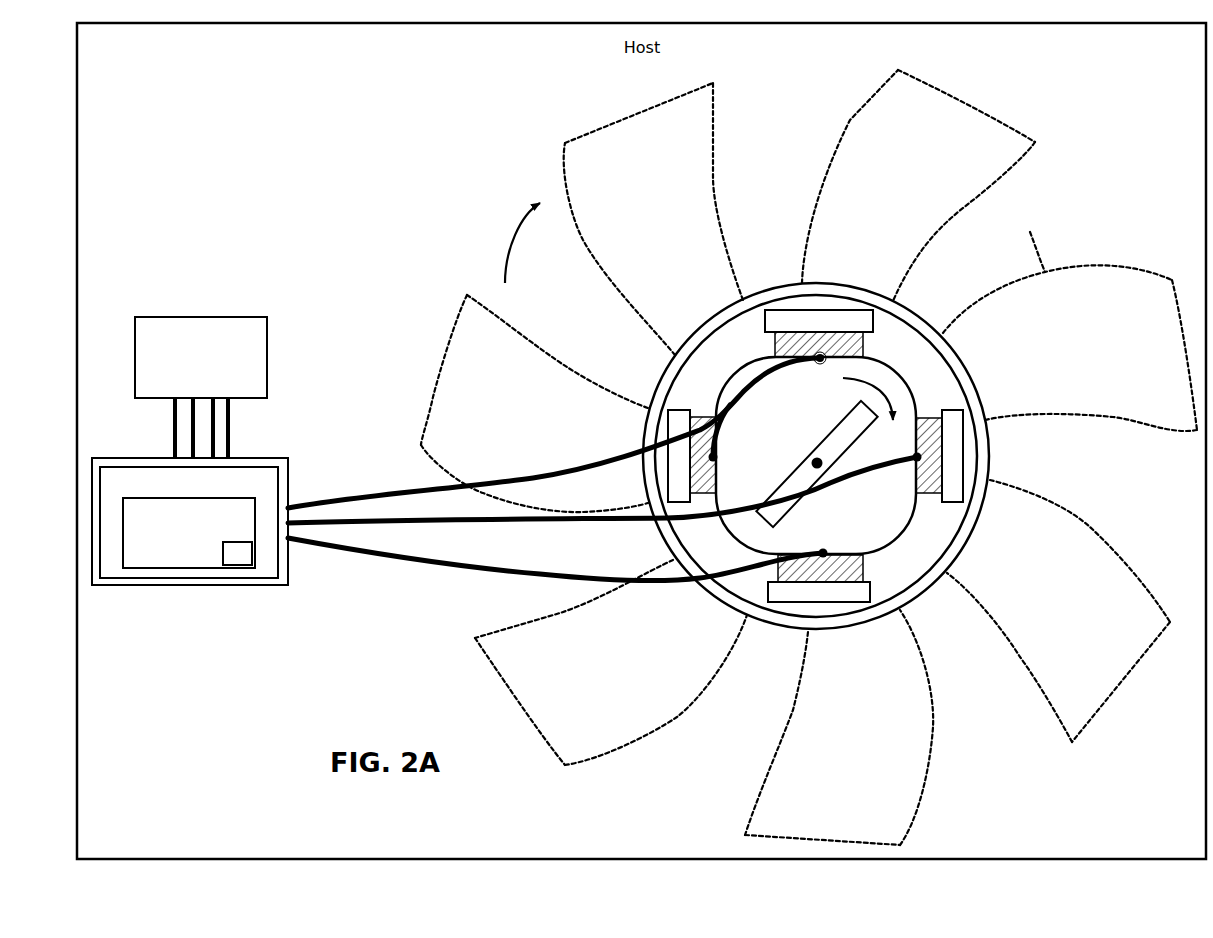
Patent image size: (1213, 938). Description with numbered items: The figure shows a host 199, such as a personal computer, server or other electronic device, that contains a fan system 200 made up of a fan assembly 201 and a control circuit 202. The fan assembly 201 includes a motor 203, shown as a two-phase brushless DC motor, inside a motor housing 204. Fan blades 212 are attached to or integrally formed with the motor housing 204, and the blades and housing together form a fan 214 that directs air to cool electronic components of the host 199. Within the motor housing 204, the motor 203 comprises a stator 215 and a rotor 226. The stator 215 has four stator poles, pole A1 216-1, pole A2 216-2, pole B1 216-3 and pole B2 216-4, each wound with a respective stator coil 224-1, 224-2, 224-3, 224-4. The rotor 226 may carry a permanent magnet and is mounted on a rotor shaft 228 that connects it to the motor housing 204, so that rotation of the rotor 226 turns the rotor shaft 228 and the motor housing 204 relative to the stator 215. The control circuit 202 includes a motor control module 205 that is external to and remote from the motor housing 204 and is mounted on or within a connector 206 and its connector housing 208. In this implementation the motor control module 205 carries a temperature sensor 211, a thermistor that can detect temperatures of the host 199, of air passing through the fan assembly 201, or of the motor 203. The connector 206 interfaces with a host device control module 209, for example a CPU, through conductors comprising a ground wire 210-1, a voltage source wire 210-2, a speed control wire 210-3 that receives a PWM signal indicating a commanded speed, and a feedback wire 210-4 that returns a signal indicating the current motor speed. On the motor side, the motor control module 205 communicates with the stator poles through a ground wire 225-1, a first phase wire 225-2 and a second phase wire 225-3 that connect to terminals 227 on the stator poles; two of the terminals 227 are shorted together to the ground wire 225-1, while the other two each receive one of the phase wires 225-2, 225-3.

The host 199 is at (77, 127).
The fan system 200 is at (208, 82).
The fan assembly 201 is at (636, 370).
The control circuit 202 is at (292, 376).
The motor 203 is at (902, 333).
The motor housing 204 is at (730, 305).
The motor control module 205 is at (190, 568).
The connector 206 is at (280, 467).
The connector housing 208 is at (282, 585).
The host device control module 209 is at (205, 317).
The ground wire 210-1 is at (173, 403).
The voltage source wire 210-2 is at (193, 422).
The speed control wire 210-3 is at (213, 442).
The feedback wire 210-4 is at (232, 425).
The temperature sensor 211 is at (252, 556).
The fan blades 212 is at (977, 197).
The fan 214 is at (1025, 128).
The stator 215 is at (713, 515).
The pole A1 216-1 is at (773, 322).
The pole A2 216-2 is at (870, 582).
The pole B1 216-3 is at (668, 425).
The pole B2 216-4 is at (963, 418).
The stator coil 224-1 is at (877, 345).
The stator coil 224-2 is at (777, 557).
The stator coil 224-3 is at (713, 480).
The stator coil 224-4 is at (930, 502).
The ground wire 225-1 is at (362, 492).
The first phase wire 225-2 is at (414, 520).
The second phase wire 225-3 is at (421, 560).
The rotor 226 is at (793, 497).
The terminals 227 is at (822, 362).
The rotor shaft 228 is at (817, 458).